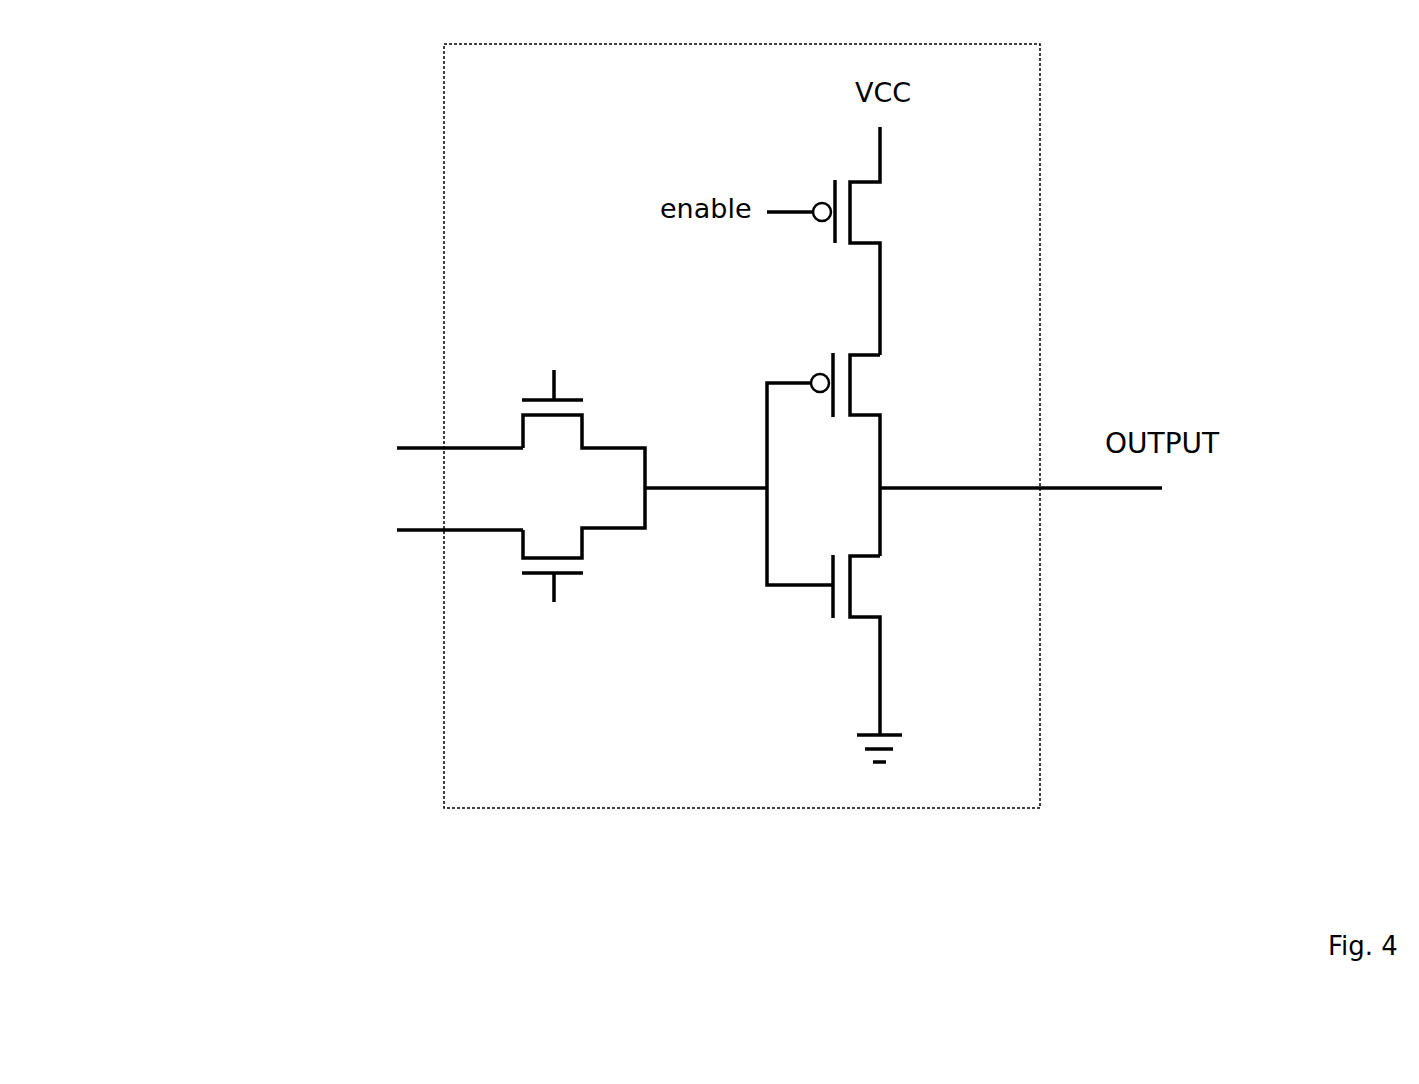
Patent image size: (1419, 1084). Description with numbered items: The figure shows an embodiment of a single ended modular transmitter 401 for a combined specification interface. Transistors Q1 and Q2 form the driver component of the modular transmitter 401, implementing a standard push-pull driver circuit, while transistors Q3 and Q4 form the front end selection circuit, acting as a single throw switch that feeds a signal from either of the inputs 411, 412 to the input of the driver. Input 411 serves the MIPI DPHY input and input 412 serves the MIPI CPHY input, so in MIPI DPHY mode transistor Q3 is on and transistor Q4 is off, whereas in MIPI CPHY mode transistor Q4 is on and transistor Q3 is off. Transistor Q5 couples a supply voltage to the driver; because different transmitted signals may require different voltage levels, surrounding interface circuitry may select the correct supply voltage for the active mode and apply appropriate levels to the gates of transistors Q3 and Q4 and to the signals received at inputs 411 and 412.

The single ended modular transmitter 401 is at (550, 764).
The input 411 is at (373, 426).
The input 412 is at (346, 529).
The transistor Q1 is at (855, 469).
The transistor Q2 is at (886, 658).
The transistor Q3 is at (583, 415).
The transistor Q4 is at (583, 551).
The transistor Q5 is at (856, 241).